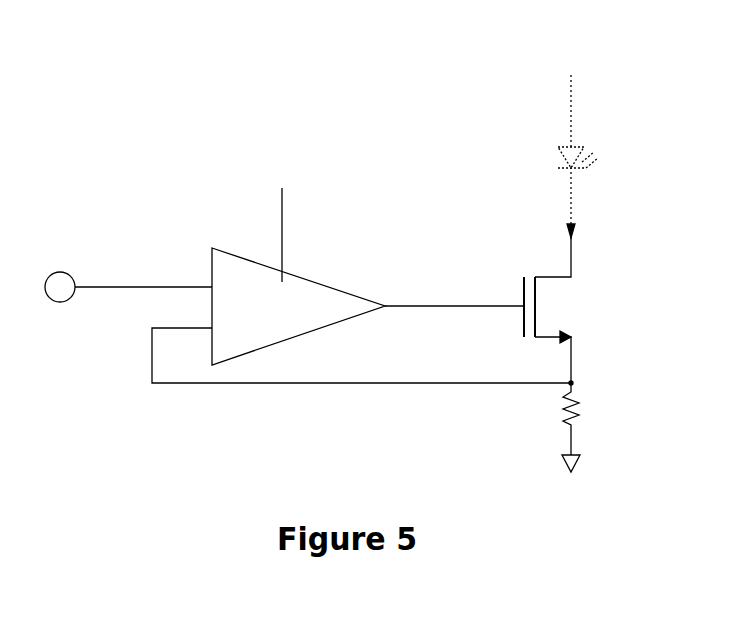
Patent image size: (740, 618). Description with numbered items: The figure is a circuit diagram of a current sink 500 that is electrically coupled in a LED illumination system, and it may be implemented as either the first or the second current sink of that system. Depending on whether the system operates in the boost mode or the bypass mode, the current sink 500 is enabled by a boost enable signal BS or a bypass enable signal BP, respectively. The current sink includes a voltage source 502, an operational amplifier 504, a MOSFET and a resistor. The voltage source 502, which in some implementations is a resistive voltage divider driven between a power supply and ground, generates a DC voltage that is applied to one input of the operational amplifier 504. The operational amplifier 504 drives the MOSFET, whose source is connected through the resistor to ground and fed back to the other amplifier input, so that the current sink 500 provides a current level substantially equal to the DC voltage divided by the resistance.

The current sink 500 is at (440, 98).
The voltage source 502 is at (312, 266).
The operational amplifier 504 is at (583, 291).